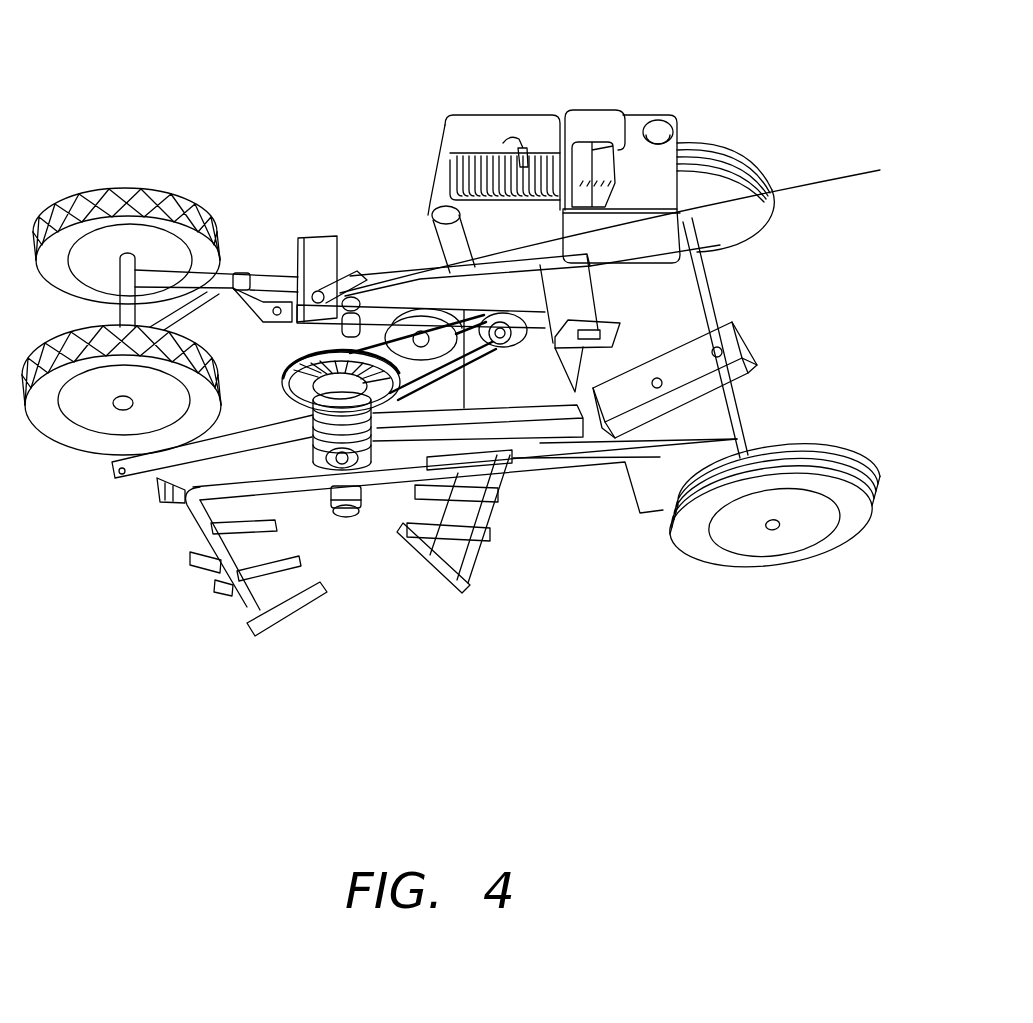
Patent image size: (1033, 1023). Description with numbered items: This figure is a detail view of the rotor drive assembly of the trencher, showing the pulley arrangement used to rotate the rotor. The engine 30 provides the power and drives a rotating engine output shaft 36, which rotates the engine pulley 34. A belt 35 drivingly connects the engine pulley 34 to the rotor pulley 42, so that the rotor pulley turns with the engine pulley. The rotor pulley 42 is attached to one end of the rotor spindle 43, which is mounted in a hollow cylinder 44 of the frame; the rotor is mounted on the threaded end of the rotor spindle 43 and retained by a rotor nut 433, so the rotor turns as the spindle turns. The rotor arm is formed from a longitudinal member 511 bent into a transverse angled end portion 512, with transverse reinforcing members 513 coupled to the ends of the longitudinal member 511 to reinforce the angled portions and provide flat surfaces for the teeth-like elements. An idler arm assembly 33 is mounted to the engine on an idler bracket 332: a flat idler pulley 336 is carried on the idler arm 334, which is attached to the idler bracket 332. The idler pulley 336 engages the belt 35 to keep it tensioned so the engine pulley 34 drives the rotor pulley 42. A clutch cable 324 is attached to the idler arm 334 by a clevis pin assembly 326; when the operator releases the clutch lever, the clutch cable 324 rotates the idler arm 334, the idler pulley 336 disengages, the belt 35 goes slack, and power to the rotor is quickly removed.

The engine 30 is at (647, 90).
The clutch cable 324 is at (810, 183).
The idler arm assembly 33 is at (292, 252).
The idler arm 334 is at (320, 248).
The clevis pin assembly 326 is at (352, 278).
The idler bracket 332 is at (428, 292).
The idler pulley 336 is at (396, 338).
The engine output shaft 36 is at (506, 345).
The belt 35 is at (413, 382).
The engine pulley 34 is at (541, 340).
The rotor pulley 42 is at (294, 370).
The hollow cylinder 44 is at (372, 424).
The rotor spindle 43 is at (340, 466).
The rotor nut 433 is at (354, 524).
The longitudinal member 511 is at (290, 503).
The angled end portion 512 is at (227, 572).
The transverse reinforcing members 513 is at (220, 528).